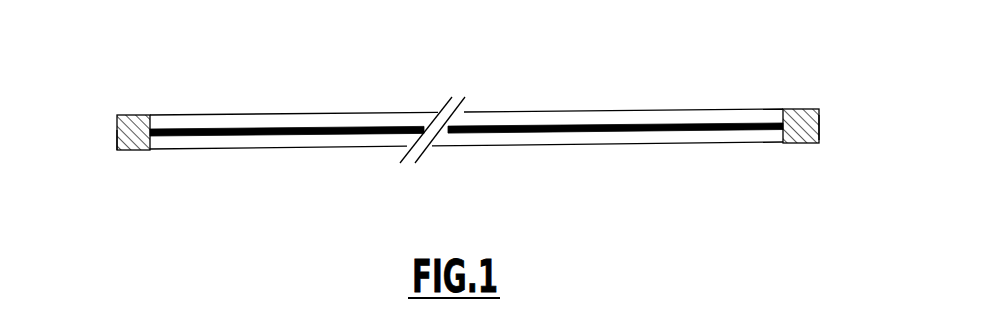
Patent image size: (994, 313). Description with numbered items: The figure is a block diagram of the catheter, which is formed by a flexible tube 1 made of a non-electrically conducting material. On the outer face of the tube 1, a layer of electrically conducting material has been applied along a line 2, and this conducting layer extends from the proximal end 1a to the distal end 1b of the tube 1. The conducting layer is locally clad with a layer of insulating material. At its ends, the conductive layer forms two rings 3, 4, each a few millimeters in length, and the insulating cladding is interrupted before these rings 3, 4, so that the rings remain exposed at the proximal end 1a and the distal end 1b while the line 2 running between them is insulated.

The flexible tube 1 is at (268, 112).
The proximal end 1a is at (117, 137).
The distal end 1b is at (822, 126).
The line 2 is at (379, 127).
The ring 3 is at (130, 115).
The ring 4 is at (798, 123).